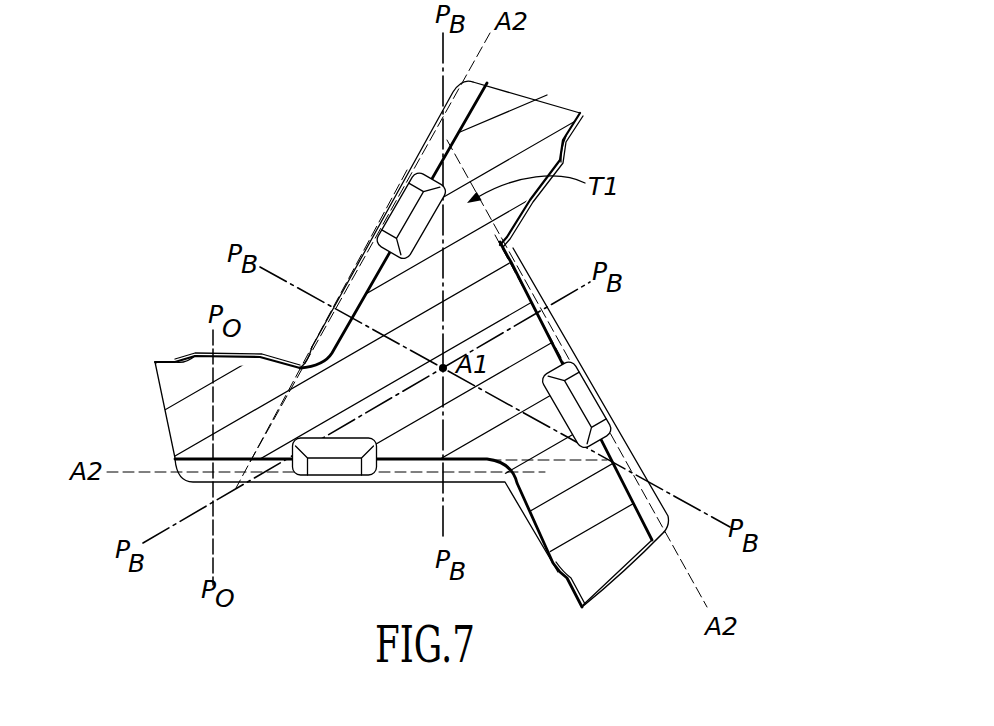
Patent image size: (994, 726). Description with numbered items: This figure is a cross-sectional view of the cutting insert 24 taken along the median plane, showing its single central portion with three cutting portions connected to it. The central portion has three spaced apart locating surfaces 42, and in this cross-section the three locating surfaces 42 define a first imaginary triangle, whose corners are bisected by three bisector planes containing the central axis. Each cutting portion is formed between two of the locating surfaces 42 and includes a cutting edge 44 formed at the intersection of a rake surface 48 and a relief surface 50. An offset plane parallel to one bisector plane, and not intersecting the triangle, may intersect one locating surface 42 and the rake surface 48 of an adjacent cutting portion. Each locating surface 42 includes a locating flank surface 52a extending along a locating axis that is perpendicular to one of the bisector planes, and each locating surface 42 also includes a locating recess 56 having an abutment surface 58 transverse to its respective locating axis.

The cutting insert 24 is at (265, 243).
The locating surface 42 is at (528, 287).
The cutting edge 44 is at (584, 114).
The rake surface 48 is at (577, 139).
The relief surface 50 is at (549, 88).
The locating flank surface 52a is at (435, 157).
The locating recess 56 is at (412, 218).
The abutment surface 58 is at (392, 252).